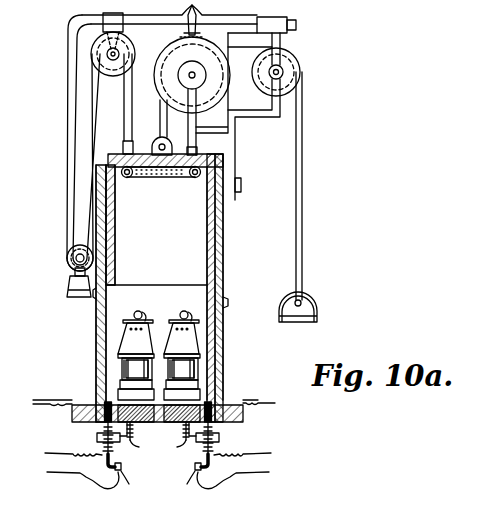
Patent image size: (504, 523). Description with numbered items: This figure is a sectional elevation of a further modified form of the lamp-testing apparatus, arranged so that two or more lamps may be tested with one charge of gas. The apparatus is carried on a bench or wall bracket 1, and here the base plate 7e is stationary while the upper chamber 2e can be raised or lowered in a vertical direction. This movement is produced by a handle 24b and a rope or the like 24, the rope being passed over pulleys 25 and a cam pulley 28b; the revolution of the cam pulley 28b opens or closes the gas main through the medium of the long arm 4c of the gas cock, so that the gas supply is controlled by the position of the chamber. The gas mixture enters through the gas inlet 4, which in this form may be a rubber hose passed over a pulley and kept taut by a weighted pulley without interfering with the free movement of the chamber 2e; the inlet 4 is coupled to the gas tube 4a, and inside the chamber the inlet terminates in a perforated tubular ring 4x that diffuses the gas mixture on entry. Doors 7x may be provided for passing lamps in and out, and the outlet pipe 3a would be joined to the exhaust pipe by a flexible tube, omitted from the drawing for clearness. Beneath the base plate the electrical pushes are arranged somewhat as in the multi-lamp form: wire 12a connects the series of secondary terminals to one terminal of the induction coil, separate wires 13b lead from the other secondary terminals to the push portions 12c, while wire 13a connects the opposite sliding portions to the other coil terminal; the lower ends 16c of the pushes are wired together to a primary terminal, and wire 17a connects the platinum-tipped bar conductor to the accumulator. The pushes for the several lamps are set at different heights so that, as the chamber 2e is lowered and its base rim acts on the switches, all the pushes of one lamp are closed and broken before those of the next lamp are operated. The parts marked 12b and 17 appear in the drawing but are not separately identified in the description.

The wall bracket 1 is at (230, 143).
The upper chamber 2e is at (215, 233).
The outlet pipe 3a is at (232, 162).
The gas mixture inlet tube 4 is at (123, 120).
The gas tube 4a is at (71, 20).
The long arm 4c is at (205, 33).
The tubular ring 4x is at (159, 179).
The base plate 7e is at (223, 280).
The door 7x is at (96, 337).
The wire 12a is at (96, 392).
The terminal bolt 12b is at (159, 427).
The push portion 12c is at (96, 403).
The wire 13a is at (37, 400).
The wire 13b is at (190, 446).
The contact piece 16c is at (151, 491).
The lead wire 17 is at (154, 445).
The wire 17a is at (144, 488).
The rope 24 is at (160, 118).
The handle 24b is at (297, 320).
The pulley 25 is at (292, 72).
The cam pulley 28b is at (226, 98).